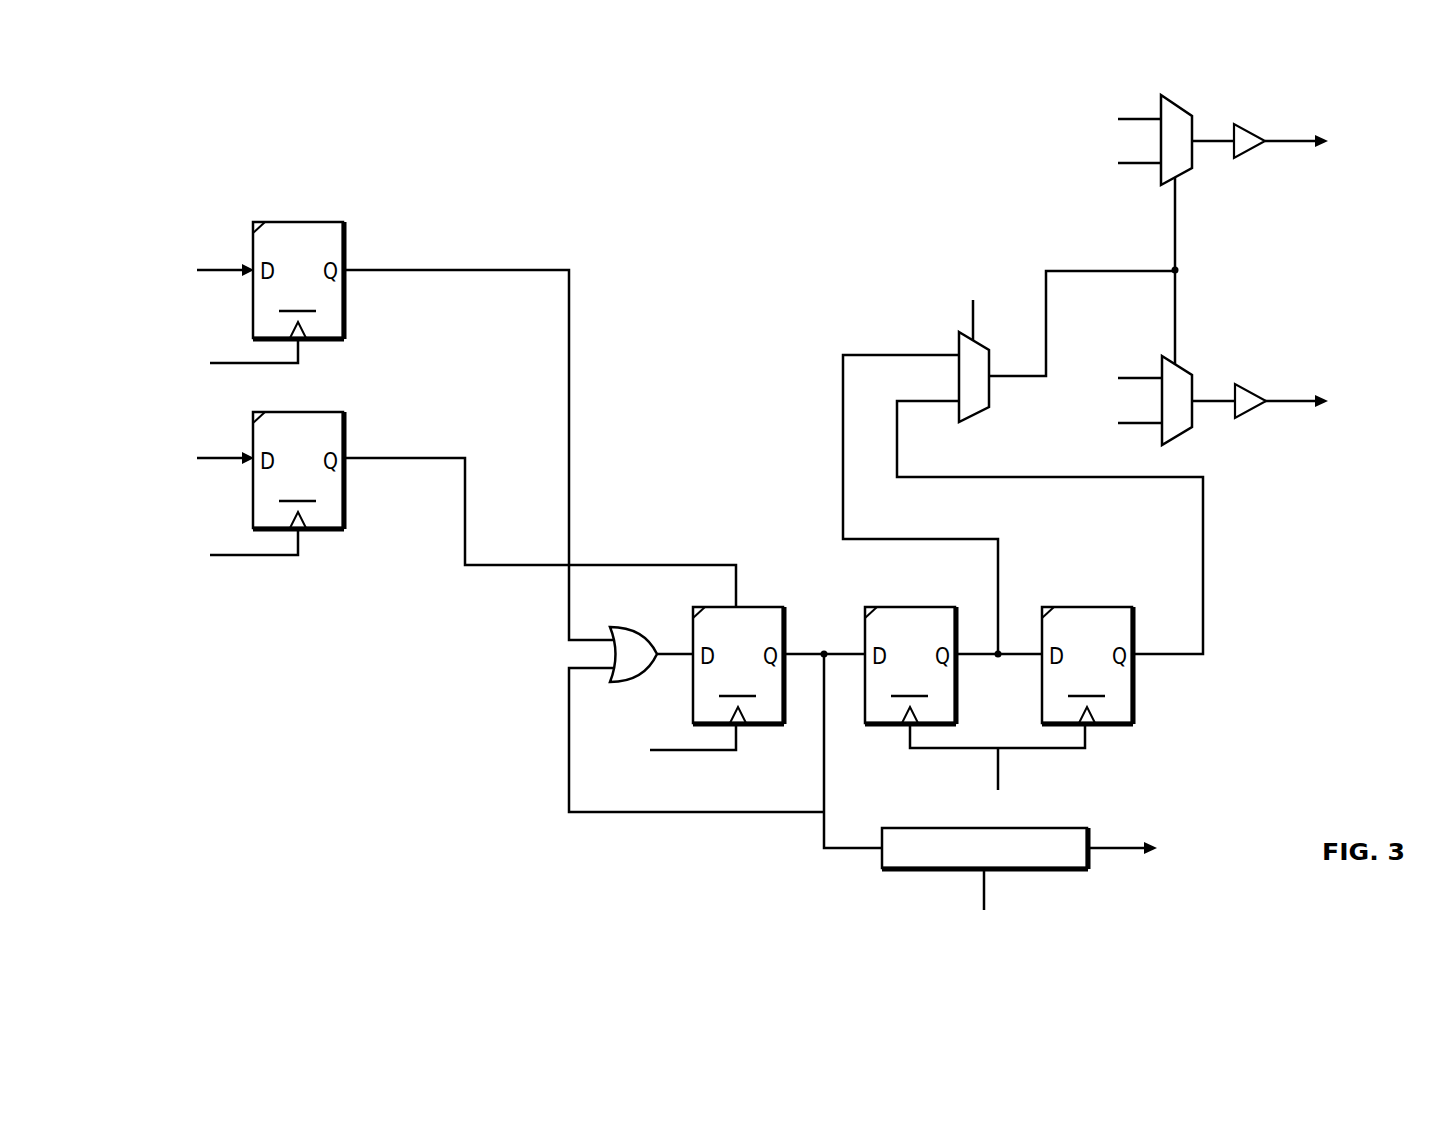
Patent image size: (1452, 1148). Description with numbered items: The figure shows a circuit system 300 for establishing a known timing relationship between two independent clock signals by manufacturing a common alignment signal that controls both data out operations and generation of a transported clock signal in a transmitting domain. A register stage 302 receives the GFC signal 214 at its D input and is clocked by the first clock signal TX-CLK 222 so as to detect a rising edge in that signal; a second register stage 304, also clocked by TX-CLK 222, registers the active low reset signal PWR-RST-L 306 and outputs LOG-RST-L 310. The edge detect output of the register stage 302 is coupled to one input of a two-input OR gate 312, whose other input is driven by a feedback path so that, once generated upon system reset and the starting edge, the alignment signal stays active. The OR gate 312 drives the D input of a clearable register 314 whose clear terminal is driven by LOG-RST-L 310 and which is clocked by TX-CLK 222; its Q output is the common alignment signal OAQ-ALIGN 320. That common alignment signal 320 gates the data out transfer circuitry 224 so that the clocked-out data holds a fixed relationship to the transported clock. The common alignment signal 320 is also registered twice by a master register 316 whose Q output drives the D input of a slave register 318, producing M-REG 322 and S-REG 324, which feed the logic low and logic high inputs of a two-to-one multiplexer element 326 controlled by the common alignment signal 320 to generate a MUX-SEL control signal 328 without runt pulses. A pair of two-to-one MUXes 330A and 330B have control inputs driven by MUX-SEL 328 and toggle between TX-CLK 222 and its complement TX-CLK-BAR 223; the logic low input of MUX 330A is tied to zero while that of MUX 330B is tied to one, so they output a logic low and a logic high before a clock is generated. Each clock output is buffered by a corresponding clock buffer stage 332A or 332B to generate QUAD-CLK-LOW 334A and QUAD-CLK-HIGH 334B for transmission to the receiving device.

The circuit system 300 is at (298, 790).
The GFC signal 214 is at (218, 270).
The register stage 302 is at (298, 280).
The PWR-RST-L 306 is at (437, 271).
The TX-CLK 222 is at (252, 365).
The register stage 304 is at (298, 470).
The LOG-RST-L 310 is at (363, 462).
The OR gate 312 is at (623, 625).
The clearable register 314 is at (738, 665).
The common alignment signal 320 is at (808, 656).
The master register 316 is at (910, 665).
The M-REG 322 is at (985, 652).
The slave register 318 is at (1087, 665).
The S-REG 324 is at (1165, 652).
The data out transfer circuitry 224 is at (917, 828).
The 2:1 multiplexer element 326 is at (975, 413).
The MUX-SEL control signal 328 is at (1027, 375).
The 2:1 MUX 330A is at (1180, 172).
The clock buffer stage 332A is at (1252, 123).
The QUAD-CLK-LOW 334A is at (1283, 145).
The 2:1 MUX 330B is at (1183, 433).
The clock buffer stage 332B is at (1252, 383).
The QUAD-CLK-HIGH 334B is at (1285, 402).
The TX-CLK-BAR 223 is at (1142, 424).